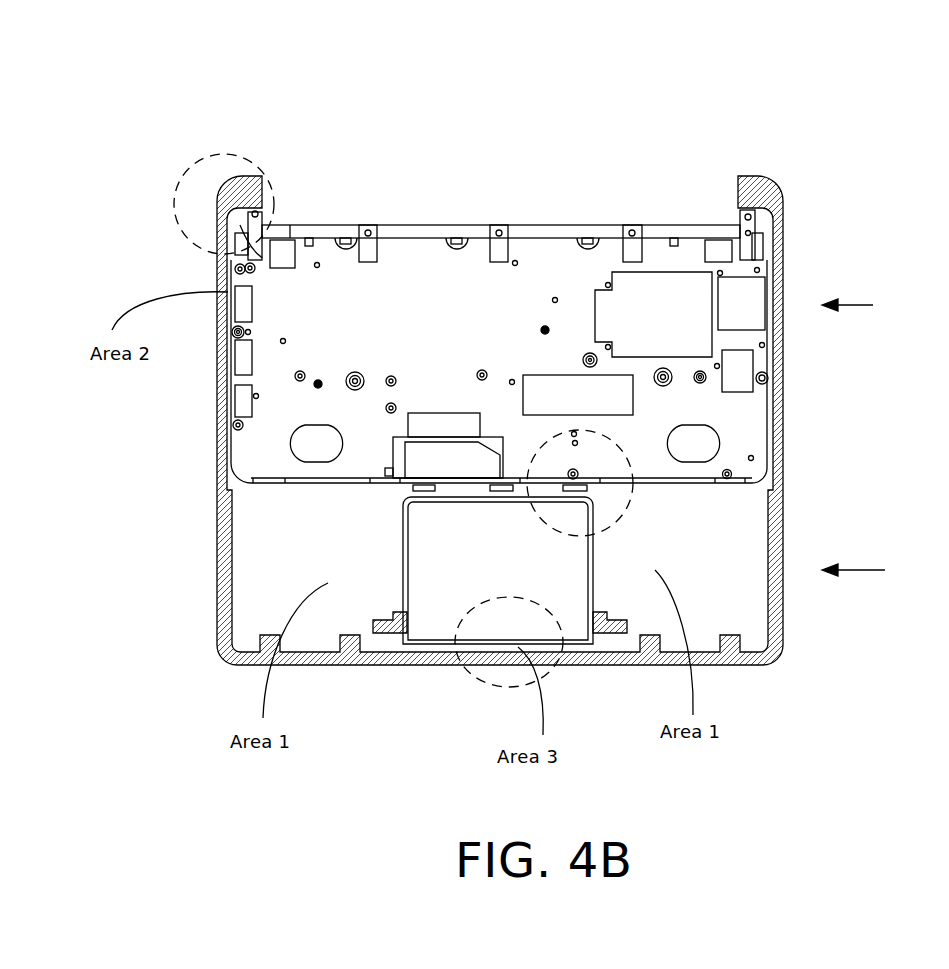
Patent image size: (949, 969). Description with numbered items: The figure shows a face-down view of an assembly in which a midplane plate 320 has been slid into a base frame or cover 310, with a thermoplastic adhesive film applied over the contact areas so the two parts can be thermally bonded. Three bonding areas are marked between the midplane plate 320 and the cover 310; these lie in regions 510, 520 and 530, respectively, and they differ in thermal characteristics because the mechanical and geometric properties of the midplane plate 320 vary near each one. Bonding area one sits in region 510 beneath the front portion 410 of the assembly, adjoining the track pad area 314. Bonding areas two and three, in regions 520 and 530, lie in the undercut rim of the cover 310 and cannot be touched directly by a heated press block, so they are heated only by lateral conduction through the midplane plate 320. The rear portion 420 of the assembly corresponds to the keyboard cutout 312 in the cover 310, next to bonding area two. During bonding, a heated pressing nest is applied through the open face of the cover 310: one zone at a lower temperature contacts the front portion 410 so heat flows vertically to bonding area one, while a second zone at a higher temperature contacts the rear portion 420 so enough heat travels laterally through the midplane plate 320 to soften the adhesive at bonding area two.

The cover 310 is at (777, 192).
The keyboard cutout 312 is at (427, 200).
The track pad area 314 is at (467, 595).
The midplane plate 320 is at (568, 290).
The front portion 410 is at (884, 571).
The rear portion 420 is at (878, 312).
The region 510 is at (632, 487).
The region 520 is at (183, 183).
The region 530 is at (482, 677).